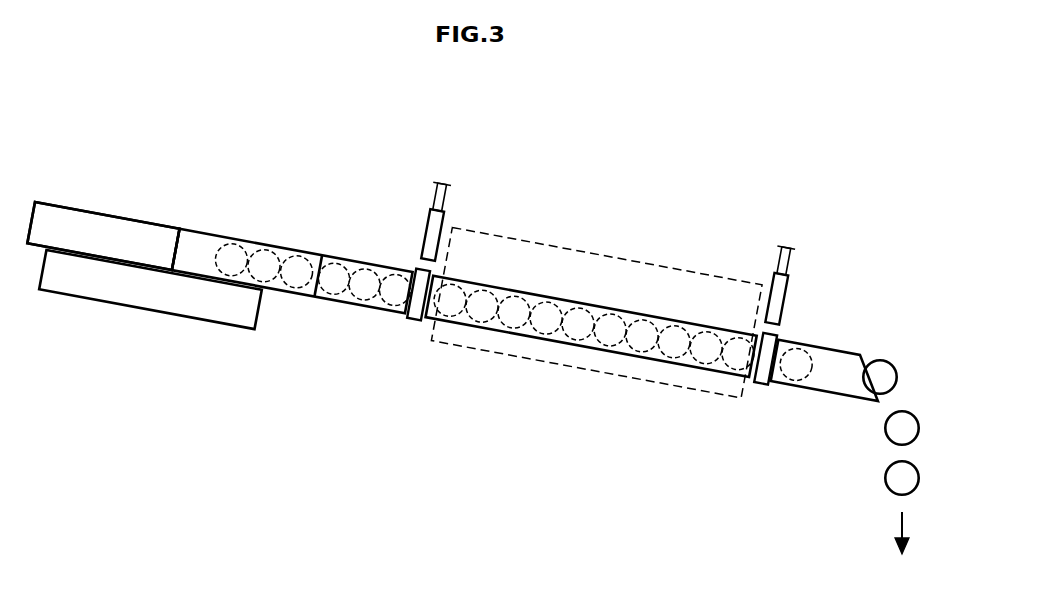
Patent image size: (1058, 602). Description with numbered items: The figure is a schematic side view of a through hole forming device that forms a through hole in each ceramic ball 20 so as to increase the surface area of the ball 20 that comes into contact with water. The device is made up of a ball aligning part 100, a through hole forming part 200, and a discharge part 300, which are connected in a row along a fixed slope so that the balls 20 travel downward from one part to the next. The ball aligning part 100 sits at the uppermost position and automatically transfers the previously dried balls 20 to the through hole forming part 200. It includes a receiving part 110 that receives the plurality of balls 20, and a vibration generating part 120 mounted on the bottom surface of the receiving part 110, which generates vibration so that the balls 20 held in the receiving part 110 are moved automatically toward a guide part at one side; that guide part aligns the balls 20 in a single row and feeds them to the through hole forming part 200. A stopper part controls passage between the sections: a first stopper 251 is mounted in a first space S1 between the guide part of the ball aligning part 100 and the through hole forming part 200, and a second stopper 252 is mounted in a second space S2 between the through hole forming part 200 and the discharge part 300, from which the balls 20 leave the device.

The ball aligning part 100 is at (219, 246).
The receiving part 110 is at (177, 229).
The vibration generating part 120 is at (183, 312).
The ceramic ball 20 is at (266, 251).
The through hole forming part 200 is at (614, 303).
The first stopper 251 is at (423, 232).
The second stopper 252 is at (781, 292).
The first space S1 is at (417, 322).
The second space S2 is at (760, 383).
The discharge part 300 is at (830, 357).